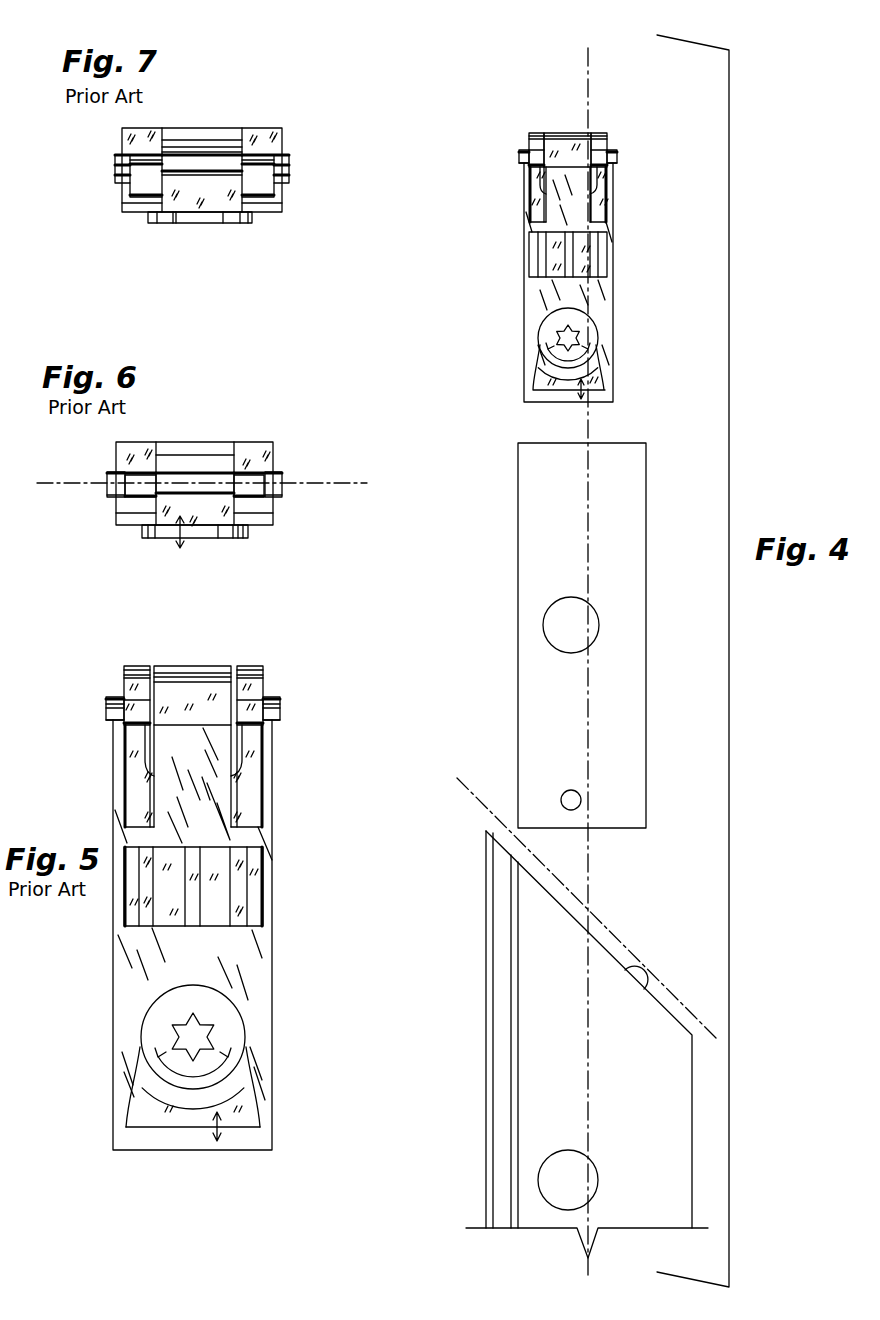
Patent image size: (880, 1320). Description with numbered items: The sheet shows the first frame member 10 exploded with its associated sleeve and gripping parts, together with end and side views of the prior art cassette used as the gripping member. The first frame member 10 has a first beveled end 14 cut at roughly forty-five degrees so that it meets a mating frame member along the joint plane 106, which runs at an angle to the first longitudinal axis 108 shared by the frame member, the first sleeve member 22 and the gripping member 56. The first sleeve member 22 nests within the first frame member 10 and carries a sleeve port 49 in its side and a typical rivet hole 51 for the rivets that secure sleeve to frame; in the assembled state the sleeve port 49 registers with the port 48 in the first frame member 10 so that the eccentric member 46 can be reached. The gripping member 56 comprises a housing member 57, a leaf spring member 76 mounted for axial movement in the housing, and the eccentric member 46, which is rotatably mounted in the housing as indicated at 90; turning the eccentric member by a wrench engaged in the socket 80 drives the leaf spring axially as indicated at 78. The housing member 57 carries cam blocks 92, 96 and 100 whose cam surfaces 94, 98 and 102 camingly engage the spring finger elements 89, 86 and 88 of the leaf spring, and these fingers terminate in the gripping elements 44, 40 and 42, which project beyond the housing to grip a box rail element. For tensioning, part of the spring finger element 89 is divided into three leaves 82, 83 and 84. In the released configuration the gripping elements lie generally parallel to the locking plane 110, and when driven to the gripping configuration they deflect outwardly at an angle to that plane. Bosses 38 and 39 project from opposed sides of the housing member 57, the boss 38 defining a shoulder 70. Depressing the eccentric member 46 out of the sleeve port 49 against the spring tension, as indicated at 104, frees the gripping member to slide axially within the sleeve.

In FIG. 4, the first frame member 10 is at (486, 1178).
In FIG. 4, the first beveled end 14 is at (644, 989).
In FIG. 4, the first sleeve member 22 is at (646, 713).
In FIG. 6, the boss 38 is at (282, 493).
In FIG. 5, the boss 38 is at (279, 698).
In FIG. 6, the boss 39 is at (115, 478).
In FIG. 5, the boss 39 is at (106, 712).
In FIG. 7, the gripping element 40 is at (260, 183).
In FIG. 6, the gripping element 40 is at (252, 482).
In FIG. 5, the gripping element 40 is at (250, 667).
In FIG. 7, the gripping element 42 is at (145, 183).
In FIG. 6, the gripping element 42 is at (138, 487).
In FIG. 5, the gripping element 42 is at (138, 667).
In FIG. 7, the gripping element 44 is at (202, 152).
In FIG. 6, the gripping element 44 is at (195, 480).
In FIG. 5, the gripping element 44 is at (192, 665).
In FIG. 7, the eccentric member 46 is at (233, 223).
In FIG. 6, the eccentric member 46 is at (205, 537).
In FIG. 5, the eccentric member 46 is at (245, 1023).
In FIG. 4, the eccentric member 46 is at (598, 337).
In FIG. 4, the port 48 is at (560, 1200).
In FIG. 4, the sleeve port 49 is at (552, 633).
In FIG. 4, the rivet hole 51 is at (580, 791).
In FIG. 5, the gripping member 56 is at (273, 838).
In FIG. 4, the gripping member 56 is at (613, 232).
In FIG. 5, the housing member 57 is at (273, 997).
In FIG. 4, the housing member 57 is at (613, 292).
In FIG. 5, the shoulder 70 is at (275, 722).
In FIG. 5, the leaf spring member 76 is at (182, 1127).
In FIG. 4, the leaf spring member 76 is at (565, 390).
In FIG. 5, the axial movement 78 is at (218, 1130).
In FIG. 5, the socket 80 is at (192, 1037).
In FIG. 5, the leaf 82 is at (167, 917).
In FIG. 5, the leaf 83 is at (193, 893).
In FIG. 5, the leaf 84 is at (213, 917).
In FIG. 5, the spring finger element 86 is at (255, 788).
In FIG. 5, the spring finger element 88 is at (133, 786).
In FIG. 5, the spring finger element 89 is at (182, 698).
In FIG. 5, the rotatable mounting 90 is at (167, 1073).
In FIG. 7, the cam block 92 is at (202, 207).
In FIG. 5, the cam block 92 is at (200, 727).
In FIG. 7, the cam surface 94 is at (215, 182).
In FIG. 7, the cam block 96 is at (280, 137).
In FIG. 7, the cam surface 98 is at (265, 150).
In FIG. 7, the cam block 100 is at (135, 142).
In FIG. 7, the cam surface 102 is at (147, 157).
In FIG. 6, the depressing movement 104 is at (170, 532).
In FIG. 4, the joint plane 106 is at (607, 928).
In FIG. 4, the first longitudinal axis 108 is at (589, 850).
In FIG. 6, the locking plane 110 is at (310, 480).